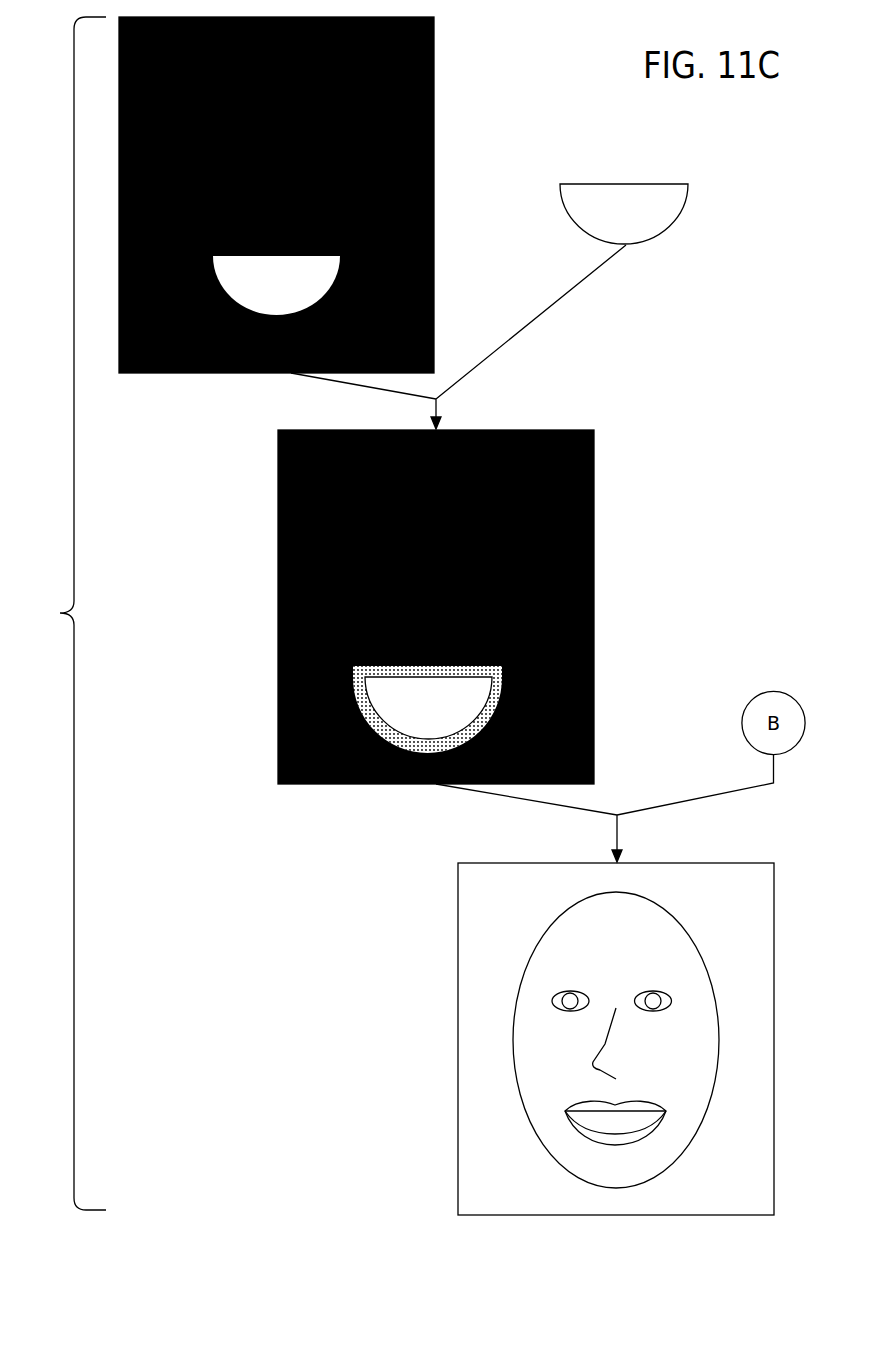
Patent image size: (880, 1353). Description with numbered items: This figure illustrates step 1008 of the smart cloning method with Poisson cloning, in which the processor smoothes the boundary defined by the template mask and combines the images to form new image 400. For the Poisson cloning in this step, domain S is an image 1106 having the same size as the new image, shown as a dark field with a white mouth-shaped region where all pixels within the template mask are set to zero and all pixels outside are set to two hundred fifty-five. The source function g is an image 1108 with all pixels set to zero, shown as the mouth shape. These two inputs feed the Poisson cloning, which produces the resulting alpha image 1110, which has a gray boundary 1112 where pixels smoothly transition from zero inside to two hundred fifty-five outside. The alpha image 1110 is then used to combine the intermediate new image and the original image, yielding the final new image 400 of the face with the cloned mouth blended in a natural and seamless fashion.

The step 1008 is at (60, 613).
The image 1106 is at (427, 88).
The image 1108 is at (662, 175).
The alpha image 1110 is at (587, 528).
The gray boundary 1112 is at (383, 664).
The new image 400 is at (450, 997).